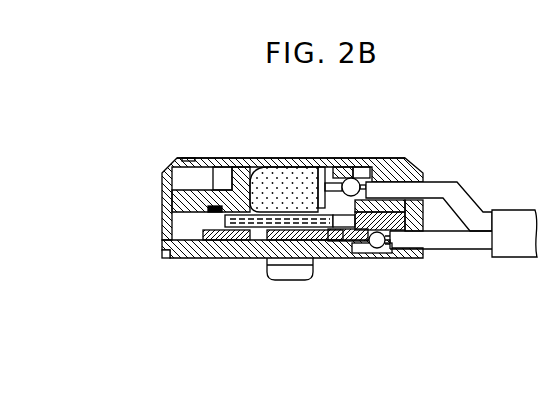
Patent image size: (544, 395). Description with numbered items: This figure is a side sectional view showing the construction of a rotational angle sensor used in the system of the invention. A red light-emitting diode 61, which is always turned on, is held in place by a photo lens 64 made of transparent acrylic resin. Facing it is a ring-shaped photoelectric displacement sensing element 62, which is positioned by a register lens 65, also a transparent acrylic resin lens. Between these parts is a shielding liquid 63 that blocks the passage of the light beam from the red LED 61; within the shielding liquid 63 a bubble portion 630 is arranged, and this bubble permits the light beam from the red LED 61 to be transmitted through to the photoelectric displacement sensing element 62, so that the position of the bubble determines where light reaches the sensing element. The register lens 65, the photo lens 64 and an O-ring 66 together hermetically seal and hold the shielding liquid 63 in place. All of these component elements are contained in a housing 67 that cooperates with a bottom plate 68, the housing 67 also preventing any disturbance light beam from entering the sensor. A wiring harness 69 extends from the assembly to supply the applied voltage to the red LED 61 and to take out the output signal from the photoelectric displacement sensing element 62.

The red light-emitting diode 61 is at (290, 180).
The ring-shaped photoelectric displacement sensing element 62 is at (370, 246).
The shielding liquid 63 is at (256, 228).
The bubble portion 630 is at (347, 217).
The photo lens 64 is at (162, 186).
The register lens 65 is at (177, 258).
The O-ring 66 is at (398, 197).
The housing 67 is at (205, 157).
The bottom plate 68 is at (208, 259).
The wiring harness 69 is at (512, 218).